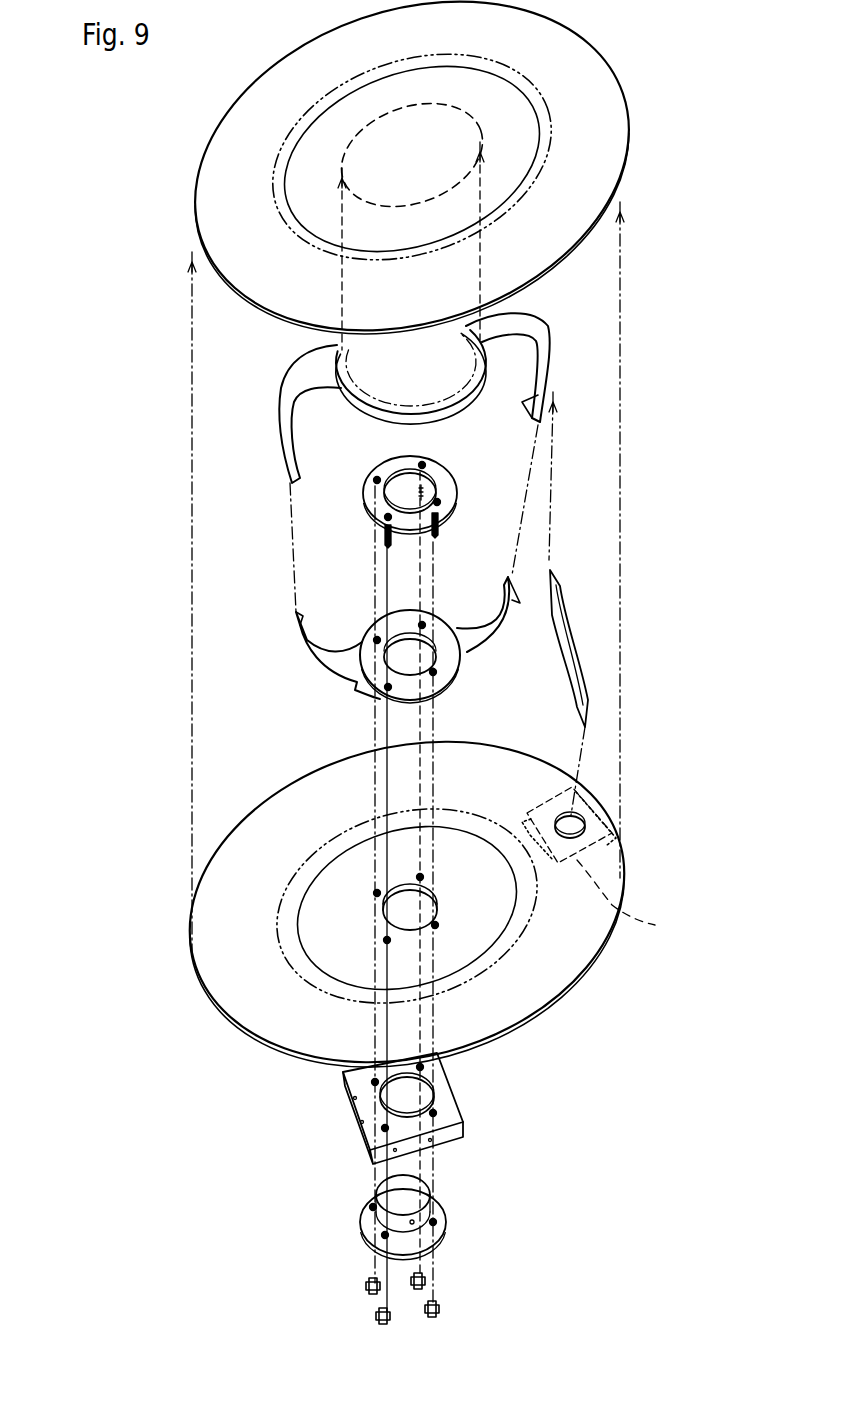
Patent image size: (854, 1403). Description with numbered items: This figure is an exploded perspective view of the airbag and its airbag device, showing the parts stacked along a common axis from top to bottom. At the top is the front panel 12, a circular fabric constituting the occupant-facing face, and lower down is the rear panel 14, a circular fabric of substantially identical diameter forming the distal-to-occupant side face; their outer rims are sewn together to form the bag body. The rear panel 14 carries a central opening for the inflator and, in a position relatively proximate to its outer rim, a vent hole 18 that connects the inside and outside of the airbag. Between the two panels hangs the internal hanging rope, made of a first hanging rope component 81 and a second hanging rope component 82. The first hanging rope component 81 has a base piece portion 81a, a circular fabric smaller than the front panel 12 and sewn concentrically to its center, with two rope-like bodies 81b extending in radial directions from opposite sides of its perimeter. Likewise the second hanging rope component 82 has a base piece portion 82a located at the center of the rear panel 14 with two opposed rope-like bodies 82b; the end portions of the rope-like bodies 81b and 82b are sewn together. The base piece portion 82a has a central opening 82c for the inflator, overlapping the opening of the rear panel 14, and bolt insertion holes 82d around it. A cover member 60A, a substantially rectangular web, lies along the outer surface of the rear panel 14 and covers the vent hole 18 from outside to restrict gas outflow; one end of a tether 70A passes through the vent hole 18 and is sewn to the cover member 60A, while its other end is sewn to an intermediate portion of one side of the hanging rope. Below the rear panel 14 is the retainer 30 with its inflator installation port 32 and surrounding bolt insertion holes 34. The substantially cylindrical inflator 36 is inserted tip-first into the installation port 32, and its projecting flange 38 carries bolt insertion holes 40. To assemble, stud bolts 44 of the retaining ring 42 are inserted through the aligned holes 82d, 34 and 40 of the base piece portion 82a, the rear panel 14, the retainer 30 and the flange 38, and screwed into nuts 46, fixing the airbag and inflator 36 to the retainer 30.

The front panel 12 is at (568, 53).
The rear panel 14 is at (258, 1006).
The vent hole 18 is at (590, 832).
The retainer 30 is at (462, 1100).
The inflator installation port 32 is at (408, 1097).
The bolt insertion holes 34 is at (372, 1084).
The inflator 36 is at (422, 1193).
The flange 38 is at (446, 1212).
The bolt insertion holes 40 is at (370, 1207).
The retaining ring 42 is at (443, 485).
The stud bolts 44 is at (440, 526).
The nuts 46 is at (376, 1315).
The cover member 60A is at (643, 905).
The tether 70A is at (572, 650).
The first hanging rope component 81 is at (470, 380).
The base piece portion 81a is at (348, 400).
The rope-like bodies 81b is at (283, 395).
The second hanging rope component 82 is at (325, 642).
The base piece portion 82a is at (448, 673).
The rope-like bodies 82b is at (492, 602).
The opening 82c is at (400, 667).
The bolt insertion holes 82d is at (375, 638).